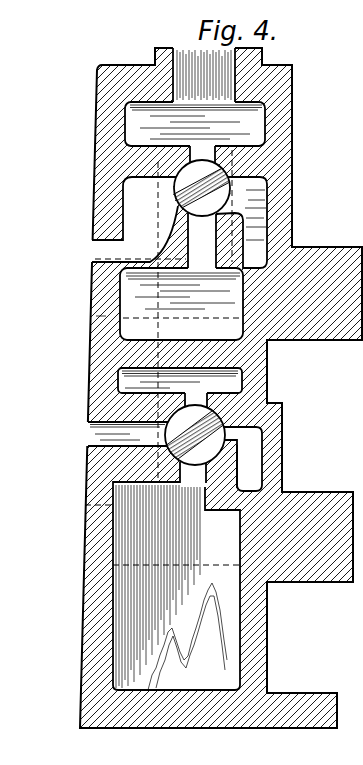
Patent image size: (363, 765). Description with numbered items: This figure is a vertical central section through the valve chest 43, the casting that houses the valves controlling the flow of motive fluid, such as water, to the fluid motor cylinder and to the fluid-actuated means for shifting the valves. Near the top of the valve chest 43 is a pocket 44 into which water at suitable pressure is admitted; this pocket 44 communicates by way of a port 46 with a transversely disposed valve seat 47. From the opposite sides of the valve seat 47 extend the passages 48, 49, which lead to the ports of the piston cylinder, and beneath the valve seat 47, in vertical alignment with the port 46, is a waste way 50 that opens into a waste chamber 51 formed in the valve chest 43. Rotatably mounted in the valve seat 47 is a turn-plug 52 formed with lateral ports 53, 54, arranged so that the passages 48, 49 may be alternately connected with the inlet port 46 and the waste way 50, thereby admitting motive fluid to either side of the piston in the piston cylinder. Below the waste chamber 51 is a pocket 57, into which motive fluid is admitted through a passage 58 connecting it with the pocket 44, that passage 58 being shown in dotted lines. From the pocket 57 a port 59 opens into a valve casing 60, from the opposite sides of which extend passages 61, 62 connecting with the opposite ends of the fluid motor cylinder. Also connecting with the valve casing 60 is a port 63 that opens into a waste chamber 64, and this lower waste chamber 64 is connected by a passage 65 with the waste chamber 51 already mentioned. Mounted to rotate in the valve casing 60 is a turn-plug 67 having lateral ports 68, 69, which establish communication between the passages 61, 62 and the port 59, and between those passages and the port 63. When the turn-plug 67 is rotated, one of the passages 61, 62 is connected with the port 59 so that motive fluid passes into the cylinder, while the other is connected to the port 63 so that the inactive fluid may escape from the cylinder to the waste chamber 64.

The valve chest 43 is at (283, 411).
The pocket 44 is at (195, 124).
The port 46 is at (210, 98).
The valve seat 47 is at (243, 210).
The passage 48 is at (100, 250).
The passage 49 is at (250, 227).
The waste way 50 is at (202, 240).
The waste chamber 51 is at (181, 304).
The turn-plug 52 is at (229, 170).
The lateral port 53 is at (226, 193).
The lateral port 54 is at (178, 192).
The pocket 57 is at (180, 381).
The passage 58 is at (125, 287).
The port 59 is at (195, 403).
The valve casing 60 is at (262, 438).
The passage 61 is at (95, 442).
The passage 62 is at (280, 478).
The port 63 is at (192, 473).
The waste chamber 64 is at (215, 668).
The passage 65 is at (92, 426).
The turn-plug 67 is at (260, 455).
The lateral port 68 is at (195, 435).
The lateral port 69 is at (195, 435).